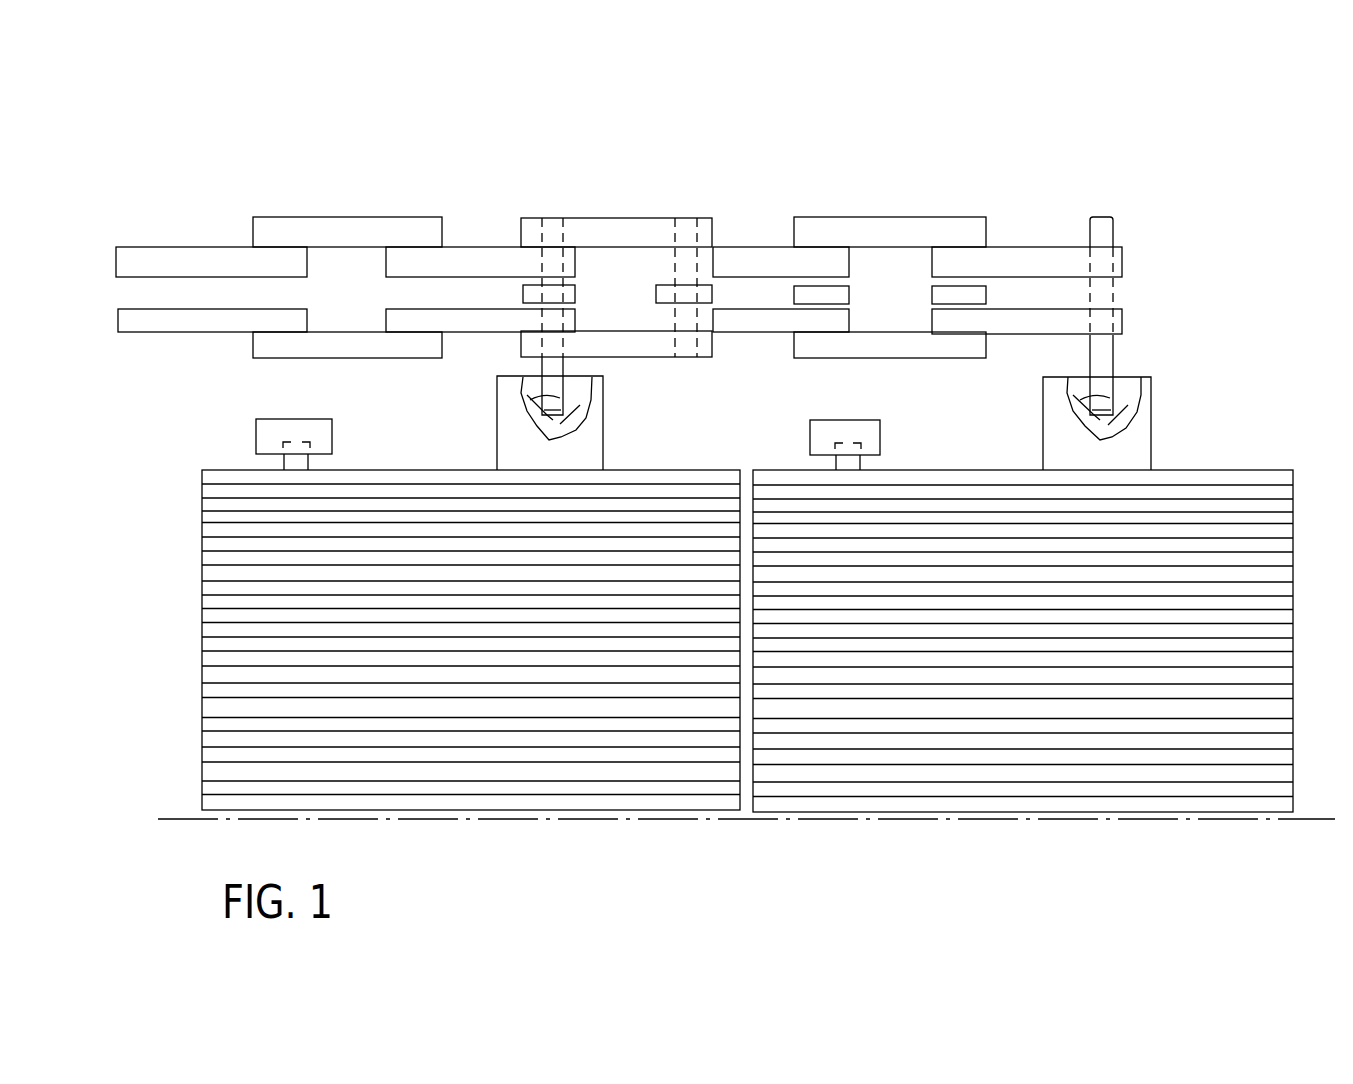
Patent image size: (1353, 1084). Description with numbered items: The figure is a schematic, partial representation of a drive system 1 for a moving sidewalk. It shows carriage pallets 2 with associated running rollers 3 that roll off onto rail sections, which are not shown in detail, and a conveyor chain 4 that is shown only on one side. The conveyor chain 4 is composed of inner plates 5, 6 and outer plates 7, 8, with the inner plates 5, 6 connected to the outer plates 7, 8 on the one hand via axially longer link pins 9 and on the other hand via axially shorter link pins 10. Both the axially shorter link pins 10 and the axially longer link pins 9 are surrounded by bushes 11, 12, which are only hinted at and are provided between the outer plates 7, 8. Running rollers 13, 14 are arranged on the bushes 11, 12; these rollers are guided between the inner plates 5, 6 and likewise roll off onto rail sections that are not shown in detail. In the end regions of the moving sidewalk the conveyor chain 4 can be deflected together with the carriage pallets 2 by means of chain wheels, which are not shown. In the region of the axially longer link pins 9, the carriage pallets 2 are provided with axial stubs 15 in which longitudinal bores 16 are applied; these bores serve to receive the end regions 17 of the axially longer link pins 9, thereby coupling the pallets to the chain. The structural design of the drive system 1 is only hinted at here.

The drive system 1 is at (740, 892).
The carriage pallets 2 is at (480, 785).
The running rollers 3 is at (262, 434).
The conveyor chain 4 is at (1205, 128).
The inner plate 5 is at (126, 258).
The inner plate 6 is at (128, 320).
The outer plate 7 is at (340, 232).
The outer plate 8 is at (343, 352).
The axially longer link pin 9 is at (557, 343).
The axially shorter link pin 10 is at (698, 240).
The bush 11 is at (511, 240).
The bush 12 is at (707, 322).
The running roller 13 is at (525, 293).
The running roller 14 is at (935, 294).
The axial stub 15 is at (500, 435).
The longitudinal bore 16 is at (522, 396).
The end region 17 is at (560, 398).